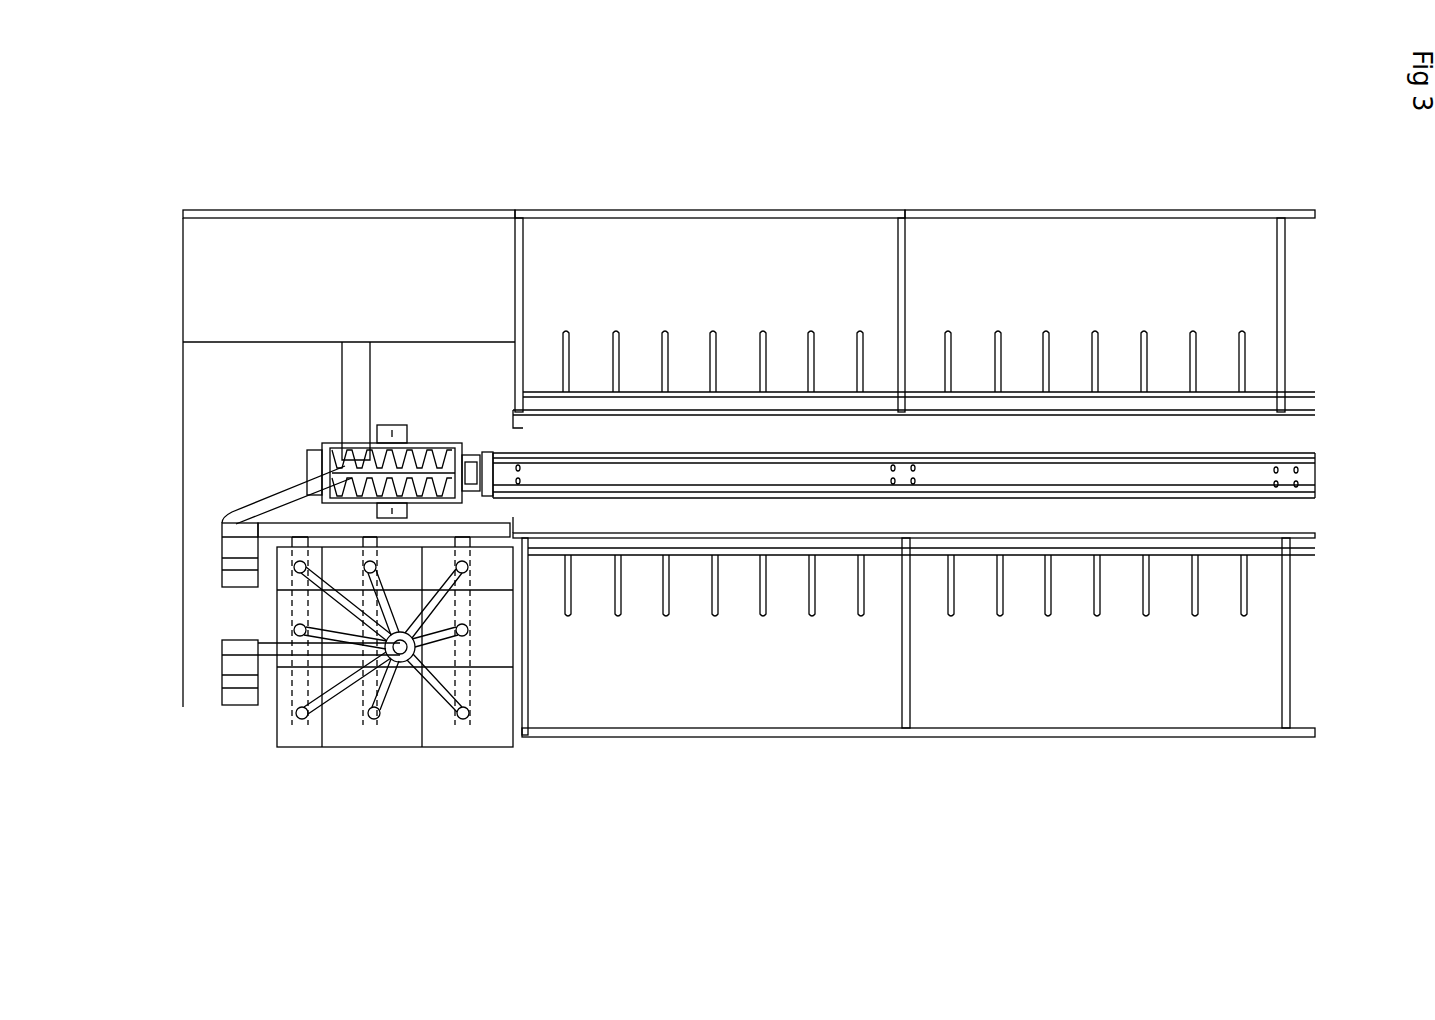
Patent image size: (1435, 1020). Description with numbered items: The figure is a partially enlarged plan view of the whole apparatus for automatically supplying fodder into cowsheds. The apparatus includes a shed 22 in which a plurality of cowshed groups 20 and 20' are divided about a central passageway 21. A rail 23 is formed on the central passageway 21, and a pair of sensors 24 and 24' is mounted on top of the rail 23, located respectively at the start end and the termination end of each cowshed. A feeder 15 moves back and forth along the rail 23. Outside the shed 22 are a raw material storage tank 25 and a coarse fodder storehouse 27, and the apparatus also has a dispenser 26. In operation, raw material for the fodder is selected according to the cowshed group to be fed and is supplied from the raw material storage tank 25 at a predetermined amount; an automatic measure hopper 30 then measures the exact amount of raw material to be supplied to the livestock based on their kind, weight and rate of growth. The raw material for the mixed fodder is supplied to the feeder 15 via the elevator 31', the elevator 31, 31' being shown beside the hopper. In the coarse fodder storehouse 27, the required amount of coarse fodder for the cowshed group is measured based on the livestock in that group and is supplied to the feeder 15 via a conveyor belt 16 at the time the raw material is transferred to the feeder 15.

The feeder 15 is at (310, 463).
The conveyor belt 16 is at (357, 380).
The cowshed group 20 is at (710, 159).
The cowshed group 20' is at (1110, 154).
The central passageway 21 is at (612, 435).
The shed 22 is at (997, 760).
The rail 23 is at (710, 470).
The sensor 24 is at (464, 427).
The sensor 24' is at (872, 310).
The raw material storage tank 25 is at (477, 738).
The dispenser 26 is at (400, 690).
The coarse fodder storehouse 27 is at (268, 248).
The automatic measure hopper 30 is at (295, 697).
The elevator 31 is at (271, 703).
The elevator 31' is at (235, 526).